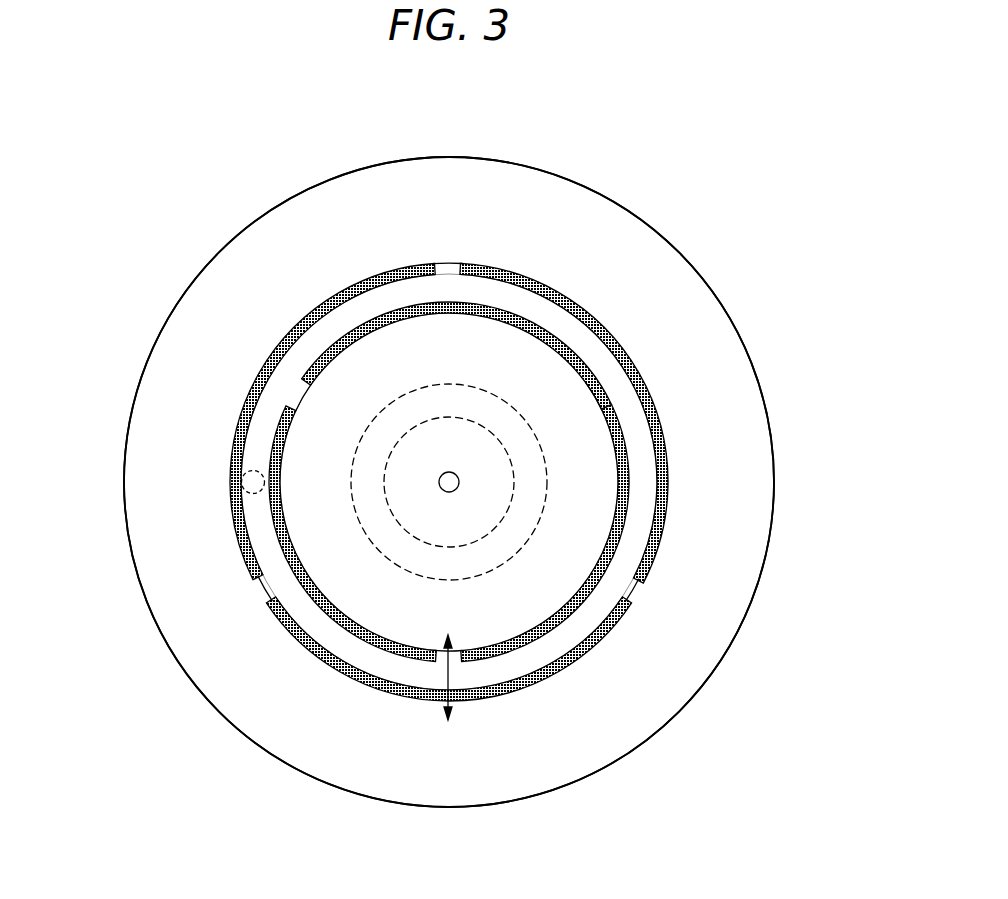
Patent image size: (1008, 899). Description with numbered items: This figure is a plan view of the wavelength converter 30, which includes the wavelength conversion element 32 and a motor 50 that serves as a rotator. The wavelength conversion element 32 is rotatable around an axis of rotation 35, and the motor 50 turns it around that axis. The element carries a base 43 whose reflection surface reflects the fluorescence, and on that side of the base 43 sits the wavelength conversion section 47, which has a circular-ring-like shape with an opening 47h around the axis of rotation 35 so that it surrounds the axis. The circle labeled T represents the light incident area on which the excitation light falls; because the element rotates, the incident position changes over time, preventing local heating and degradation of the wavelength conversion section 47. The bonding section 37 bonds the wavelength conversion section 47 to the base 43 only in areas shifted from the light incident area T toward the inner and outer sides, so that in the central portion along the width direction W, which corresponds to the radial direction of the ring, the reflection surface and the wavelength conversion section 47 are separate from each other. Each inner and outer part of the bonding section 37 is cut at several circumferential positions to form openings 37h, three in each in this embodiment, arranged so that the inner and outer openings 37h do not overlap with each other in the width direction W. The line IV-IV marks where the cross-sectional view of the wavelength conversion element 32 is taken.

The wavelength converter 30 is at (313, 182).
The wavelength conversion element 32 is at (666, 213).
The base 43 is at (505, 190).
The bonding section 37 is at (330, 342).
The openings 37h is at (449, 262).
The opening 47h is at (474, 345).
The wavelength conversion section 47 is at (293, 607).
The motor 50 is at (412, 574).
The axis of rotation 35 is at (458, 481).
The light incident area T is at (246, 471).
The line IV- IV is at (205, 475).
The width direction W is at (449, 672).